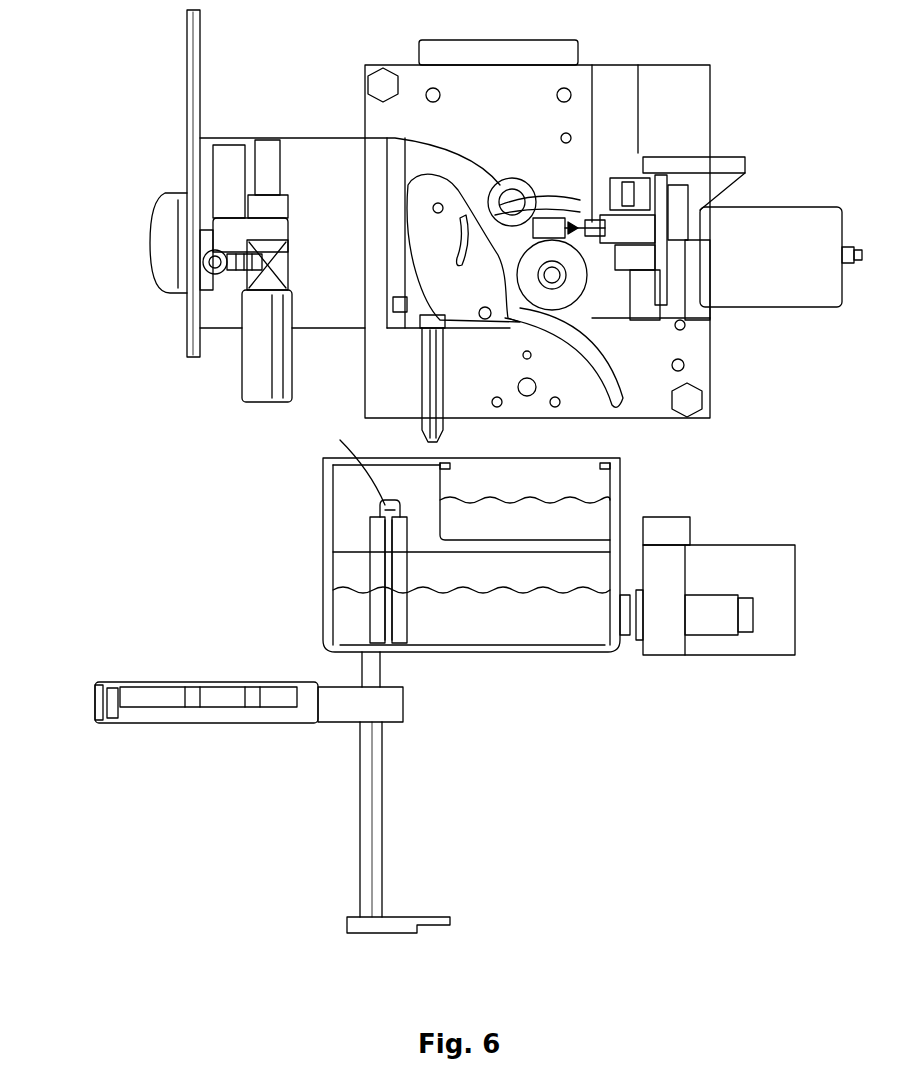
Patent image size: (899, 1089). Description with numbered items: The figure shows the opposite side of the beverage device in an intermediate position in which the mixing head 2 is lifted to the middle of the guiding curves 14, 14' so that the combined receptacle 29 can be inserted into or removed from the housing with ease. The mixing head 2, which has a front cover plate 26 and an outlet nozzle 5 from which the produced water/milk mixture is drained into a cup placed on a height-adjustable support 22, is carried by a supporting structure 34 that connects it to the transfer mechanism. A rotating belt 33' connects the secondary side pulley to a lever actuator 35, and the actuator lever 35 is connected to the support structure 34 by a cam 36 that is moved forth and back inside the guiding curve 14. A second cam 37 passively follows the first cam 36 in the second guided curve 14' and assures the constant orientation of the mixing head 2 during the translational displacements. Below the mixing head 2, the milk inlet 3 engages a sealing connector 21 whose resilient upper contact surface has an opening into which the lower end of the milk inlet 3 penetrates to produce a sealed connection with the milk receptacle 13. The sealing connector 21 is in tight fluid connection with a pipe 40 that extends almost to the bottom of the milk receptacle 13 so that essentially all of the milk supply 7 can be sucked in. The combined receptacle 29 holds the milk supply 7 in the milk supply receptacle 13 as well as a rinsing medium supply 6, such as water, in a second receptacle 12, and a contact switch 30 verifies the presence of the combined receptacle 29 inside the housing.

The mixing head 2 is at (170, 50).
The milk inlet 3 is at (445, 425).
The outlet nozzle 5 is at (240, 385).
The rinsing medium supply 6 is at (598, 515).
The milk supply 7 is at (343, 625).
The second receptacle 12 is at (625, 480).
The milk receptacle 13 is at (325, 570).
The guiding curve 14 is at (493, 229).
The second guiding curve 14' is at (592, 381).
The sealing connector 21 is at (385, 505).
The height-adjustable support 22 is at (95, 698).
The front cover plate 26 is at (190, 350).
The combined receptacle 29 is at (500, 652).
The contact switch 30 is at (632, 640).
The rotating belt 33' is at (591, 301).
The supporting structure 34 is at (330, 137).
The lever actuator 35 is at (578, 190).
The cam 36 is at (512, 195).
The second cam 37 is at (492, 318).
The pipe 40 is at (405, 620).